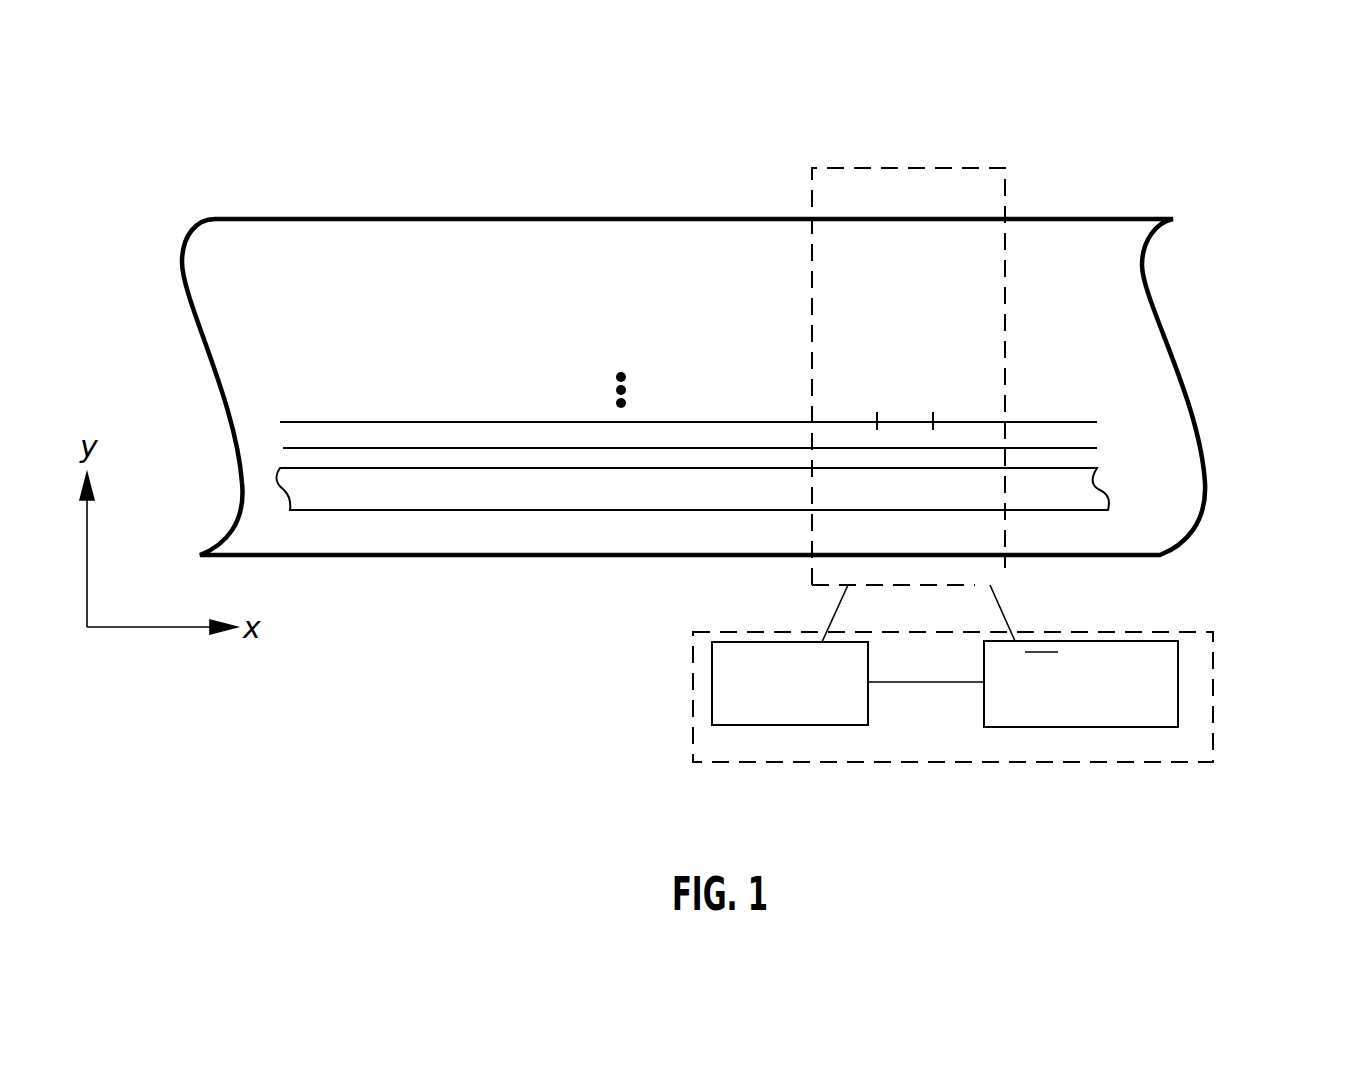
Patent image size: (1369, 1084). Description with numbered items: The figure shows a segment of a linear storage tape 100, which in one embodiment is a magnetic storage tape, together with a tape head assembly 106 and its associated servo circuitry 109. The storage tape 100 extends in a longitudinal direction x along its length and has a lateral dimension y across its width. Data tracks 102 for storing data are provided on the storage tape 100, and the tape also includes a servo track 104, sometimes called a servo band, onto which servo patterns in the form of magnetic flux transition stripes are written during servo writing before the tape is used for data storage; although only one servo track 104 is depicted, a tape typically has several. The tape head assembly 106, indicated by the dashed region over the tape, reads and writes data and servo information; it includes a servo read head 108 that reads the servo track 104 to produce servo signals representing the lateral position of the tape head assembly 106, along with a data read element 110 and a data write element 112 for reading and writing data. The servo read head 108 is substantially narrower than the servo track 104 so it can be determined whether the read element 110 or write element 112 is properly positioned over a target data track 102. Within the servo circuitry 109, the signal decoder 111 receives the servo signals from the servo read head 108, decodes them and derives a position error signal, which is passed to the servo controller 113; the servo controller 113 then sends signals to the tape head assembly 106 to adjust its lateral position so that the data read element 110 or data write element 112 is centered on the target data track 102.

The storage tape 100 is at (644, 387).
The data tracks 102 is at (778, 376).
The servo track 104 is at (693, 535).
The tape head assembly 106 is at (958, 405).
The servo read head 108 is at (943, 551).
The servo circuitry 109 is at (1003, 670).
The data read element 110 is at (776, 303).
The signal decoder 111 is at (768, 658).
The data write element 112 is at (1092, 341).
The servo controller 113 is at (1101, 653).